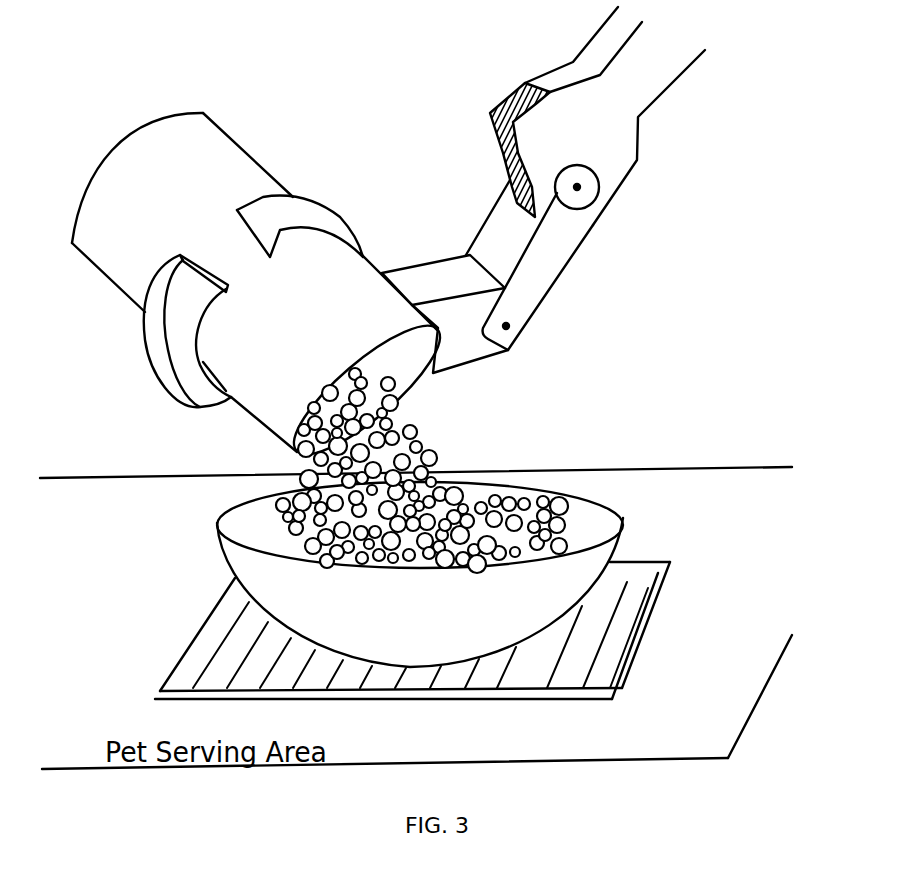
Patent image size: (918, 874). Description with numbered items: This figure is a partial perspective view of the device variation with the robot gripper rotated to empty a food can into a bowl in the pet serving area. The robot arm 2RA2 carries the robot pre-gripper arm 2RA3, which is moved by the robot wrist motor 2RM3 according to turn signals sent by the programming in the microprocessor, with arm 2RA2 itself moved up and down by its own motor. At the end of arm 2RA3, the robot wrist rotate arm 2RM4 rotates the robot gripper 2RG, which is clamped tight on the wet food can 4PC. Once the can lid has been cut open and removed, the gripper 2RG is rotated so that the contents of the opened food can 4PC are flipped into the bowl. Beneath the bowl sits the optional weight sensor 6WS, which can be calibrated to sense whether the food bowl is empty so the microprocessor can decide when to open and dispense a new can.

The wet food can 4PC is at (217, 130).
The robot gripper 2RG is at (293, 207).
The robot wrist rotate arm 2RM4 is at (422, 273).
The robot wrist motor 2RM3 is at (509, 98).
The robot arm 2RA2 is at (620, 181).
The robot pre-gripper arm 2RA3 is at (540, 263).
The weight sensor 6WS is at (670, 572).